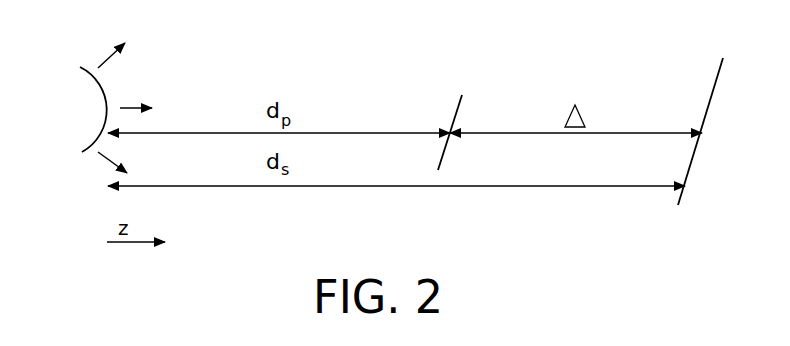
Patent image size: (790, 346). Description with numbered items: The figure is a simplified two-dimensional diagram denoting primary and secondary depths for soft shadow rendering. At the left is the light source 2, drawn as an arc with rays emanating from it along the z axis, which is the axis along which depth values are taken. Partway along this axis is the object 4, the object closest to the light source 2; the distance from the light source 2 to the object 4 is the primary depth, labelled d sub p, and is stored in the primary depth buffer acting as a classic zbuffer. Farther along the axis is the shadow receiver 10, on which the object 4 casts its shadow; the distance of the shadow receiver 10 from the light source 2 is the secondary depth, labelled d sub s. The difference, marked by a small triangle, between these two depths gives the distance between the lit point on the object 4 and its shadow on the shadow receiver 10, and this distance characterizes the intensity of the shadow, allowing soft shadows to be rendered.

The light source 2 is at (92, 108).
The object 4 is at (455, 103).
The shadow receiver 10 is at (715, 75).